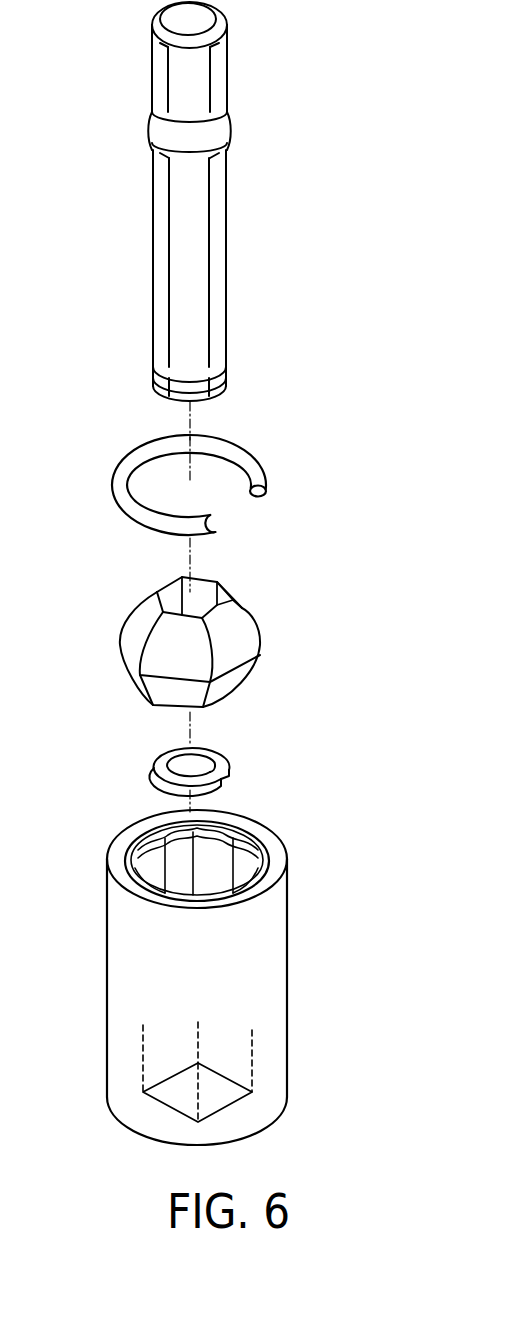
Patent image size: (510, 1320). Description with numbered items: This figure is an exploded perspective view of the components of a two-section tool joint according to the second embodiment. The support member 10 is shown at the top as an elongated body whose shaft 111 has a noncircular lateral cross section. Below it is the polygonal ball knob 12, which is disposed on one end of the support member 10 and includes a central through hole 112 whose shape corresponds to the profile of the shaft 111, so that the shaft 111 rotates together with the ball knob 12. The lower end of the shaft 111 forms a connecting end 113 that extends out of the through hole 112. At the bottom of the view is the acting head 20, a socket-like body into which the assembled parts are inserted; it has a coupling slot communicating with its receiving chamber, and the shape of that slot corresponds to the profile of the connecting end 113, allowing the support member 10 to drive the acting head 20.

The support member 10 is at (215, 407).
The shaft 111 is at (210, 270).
The connecting end 113 is at (172, 397).
The polygonal ball knob 12 is at (246, 623).
The through hole 112 is at (200, 593).
The acting head 20 is at (258, 940).